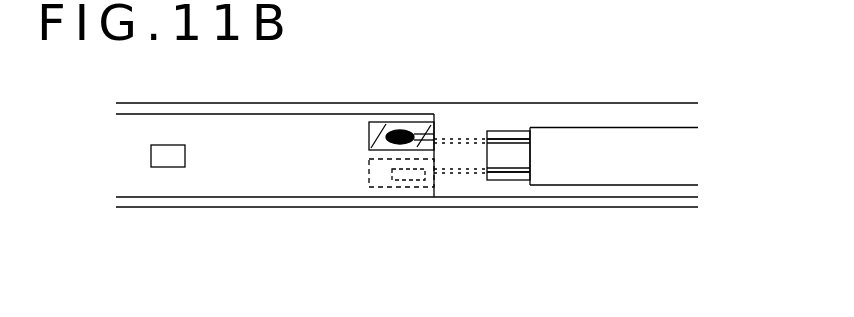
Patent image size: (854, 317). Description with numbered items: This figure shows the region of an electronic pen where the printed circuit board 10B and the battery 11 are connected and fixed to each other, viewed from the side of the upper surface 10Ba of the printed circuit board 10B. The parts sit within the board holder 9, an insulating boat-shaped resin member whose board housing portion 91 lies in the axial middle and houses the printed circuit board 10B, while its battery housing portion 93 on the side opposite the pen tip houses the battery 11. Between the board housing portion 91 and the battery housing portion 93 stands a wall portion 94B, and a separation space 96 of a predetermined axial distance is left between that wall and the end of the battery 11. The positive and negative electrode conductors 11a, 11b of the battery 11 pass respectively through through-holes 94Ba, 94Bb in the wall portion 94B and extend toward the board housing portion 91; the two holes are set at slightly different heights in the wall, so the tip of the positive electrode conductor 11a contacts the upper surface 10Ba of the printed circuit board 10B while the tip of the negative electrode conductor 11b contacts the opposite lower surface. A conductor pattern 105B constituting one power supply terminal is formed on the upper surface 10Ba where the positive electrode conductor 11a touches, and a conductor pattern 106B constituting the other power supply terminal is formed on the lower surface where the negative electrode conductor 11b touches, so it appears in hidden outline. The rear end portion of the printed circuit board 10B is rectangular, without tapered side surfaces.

The board holder 9 is at (293, 96).
The printed circuit board 10B is at (228, 125).
The upper surface of printed circuit board 10Ba is at (152, 125).
The board housing portion 91 is at (247, 207).
The battery housing portion 93 is at (672, 197).
The conductor pattern 105B is at (376, 122).
The conductor pattern 106B is at (384, 178).
The wall portion 94B is at (471, 122).
The through-hole 94Ba is at (447, 139).
The through-hole 94Bb is at (449, 176).
The separation space 96 is at (520, 182).
The battery 11 is at (613, 142).
The positive electrode conductor 11a is at (519, 139).
The negative electrode conductor 11b is at (506, 172).